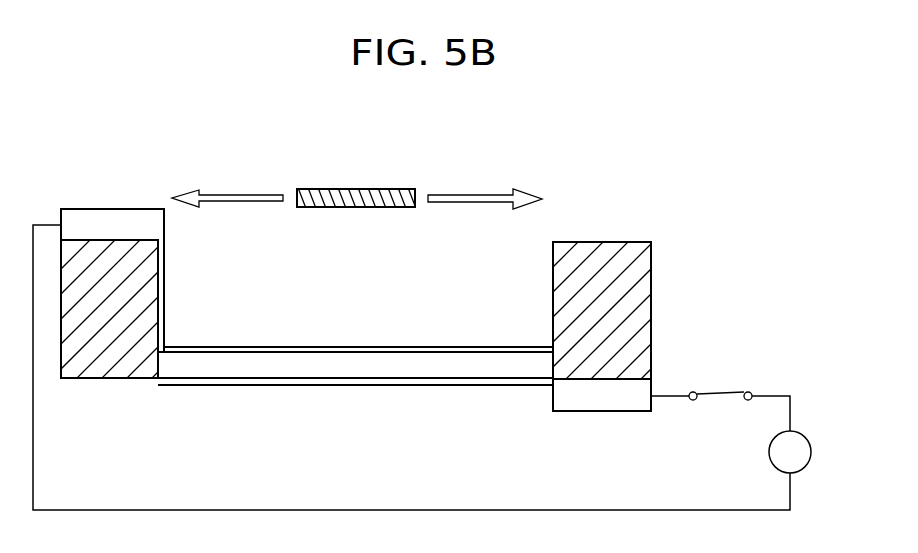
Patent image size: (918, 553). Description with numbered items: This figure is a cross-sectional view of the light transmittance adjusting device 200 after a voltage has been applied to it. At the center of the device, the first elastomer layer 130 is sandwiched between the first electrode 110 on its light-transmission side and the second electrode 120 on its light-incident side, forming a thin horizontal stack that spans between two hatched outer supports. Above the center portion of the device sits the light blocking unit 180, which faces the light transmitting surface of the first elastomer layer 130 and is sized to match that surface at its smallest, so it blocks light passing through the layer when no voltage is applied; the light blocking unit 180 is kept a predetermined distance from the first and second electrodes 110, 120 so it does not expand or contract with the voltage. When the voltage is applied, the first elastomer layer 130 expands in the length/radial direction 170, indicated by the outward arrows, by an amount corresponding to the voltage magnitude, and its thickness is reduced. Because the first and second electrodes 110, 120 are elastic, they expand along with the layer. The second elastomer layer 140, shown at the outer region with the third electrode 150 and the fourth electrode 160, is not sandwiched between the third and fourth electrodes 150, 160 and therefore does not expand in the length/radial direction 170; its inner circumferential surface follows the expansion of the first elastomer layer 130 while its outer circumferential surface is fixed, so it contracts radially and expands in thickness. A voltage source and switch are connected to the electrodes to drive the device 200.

The light transmittance adjusting device 200 is at (88, 148).
The third electrode 150 is at (122, 217).
The second elastomer layer 140 is at (97, 370).
The first electrode 110 is at (357, 352).
The first elastomer layer 130 is at (445, 367).
The second electrode 120 is at (373, 386).
The fourth electrode 160 is at (592, 407).
The light blocking unit 180 is at (362, 190).
The length/radial direction 170 is at (357, 187).